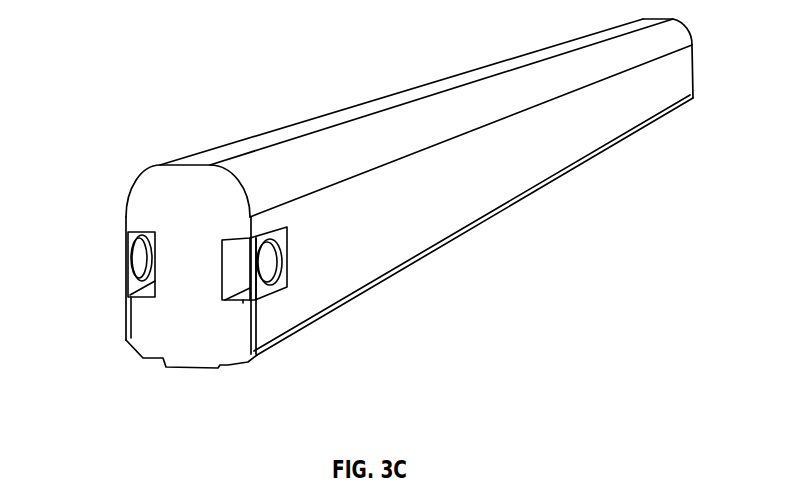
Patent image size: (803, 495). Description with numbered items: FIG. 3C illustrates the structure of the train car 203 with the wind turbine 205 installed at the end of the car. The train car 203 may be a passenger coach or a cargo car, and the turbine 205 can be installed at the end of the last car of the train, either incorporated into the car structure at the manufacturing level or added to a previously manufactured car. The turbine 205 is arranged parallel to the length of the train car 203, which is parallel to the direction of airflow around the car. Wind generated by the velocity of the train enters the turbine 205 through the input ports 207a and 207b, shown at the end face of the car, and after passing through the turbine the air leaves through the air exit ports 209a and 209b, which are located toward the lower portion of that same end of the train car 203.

The train car 203 is at (435, 88).
The wind turbine 205 is at (142, 258).
The input port 207a is at (127, 240).
The input port 207b is at (287, 272).
The air exit port 209a is at (128, 313).
The air exit port 209b is at (243, 305).